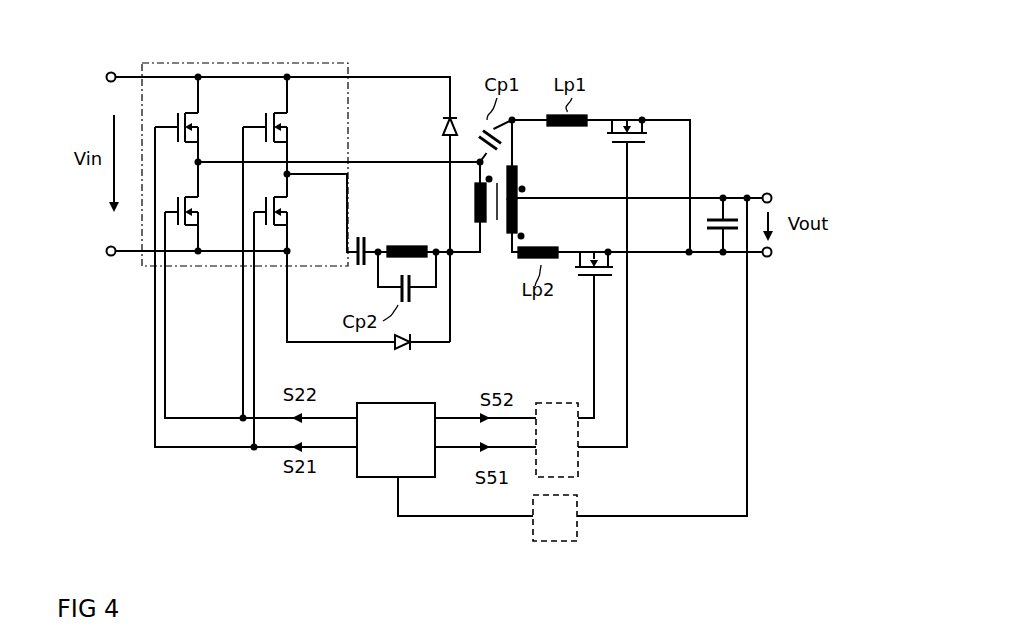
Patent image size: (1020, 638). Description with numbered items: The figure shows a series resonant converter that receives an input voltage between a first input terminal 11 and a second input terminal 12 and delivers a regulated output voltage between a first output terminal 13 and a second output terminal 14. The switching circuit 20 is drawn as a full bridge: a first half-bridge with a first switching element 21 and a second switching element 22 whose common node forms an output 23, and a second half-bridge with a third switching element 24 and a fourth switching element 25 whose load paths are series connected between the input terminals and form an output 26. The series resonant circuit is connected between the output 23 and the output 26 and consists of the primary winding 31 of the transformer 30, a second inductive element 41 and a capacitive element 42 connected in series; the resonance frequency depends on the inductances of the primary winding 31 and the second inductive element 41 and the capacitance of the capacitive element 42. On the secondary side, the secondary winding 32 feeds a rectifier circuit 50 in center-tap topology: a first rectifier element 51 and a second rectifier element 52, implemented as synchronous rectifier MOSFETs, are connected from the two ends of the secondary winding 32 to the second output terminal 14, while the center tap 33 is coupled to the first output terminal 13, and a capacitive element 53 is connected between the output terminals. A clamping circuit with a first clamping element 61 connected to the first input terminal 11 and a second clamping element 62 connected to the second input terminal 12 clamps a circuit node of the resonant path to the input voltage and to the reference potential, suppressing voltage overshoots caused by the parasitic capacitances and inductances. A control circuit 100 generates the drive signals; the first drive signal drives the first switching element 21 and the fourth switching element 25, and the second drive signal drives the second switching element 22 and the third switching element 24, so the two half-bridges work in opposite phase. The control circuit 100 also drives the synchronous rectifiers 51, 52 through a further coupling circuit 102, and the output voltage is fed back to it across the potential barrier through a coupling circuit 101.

The first input terminal 11 is at (112, 66).
The second input terminal 12 is at (113, 260).
The first output terminal 13 is at (771, 191).
The second output terminal 14 is at (769, 260).
The switching circuit 20 is at (247, 65).
The first switching element 21 is at (205, 121).
The second switching element 22 is at (201, 215).
The output of the half-bridge circuit 23 is at (207, 159).
The third switching element 24 is at (293, 134).
The fourth switching element 25 is at (294, 218).
The output of the second half-bridge circuit 26 is at (347, 194).
The transformer 30 is at (509, 224).
The primary winding 31 is at (473, 205).
The secondary winding 32 is at (521, 182).
The center tap 33 is at (524, 240).
The second inductive element 41 is at (408, 243).
The capacitive element 42 is at (357, 271).
The rectifier circuit 50 is at (612, 156).
The first rectifier element 51 is at (626, 113).
The second rectifier element 52 is at (590, 250).
The capacitive element 53 is at (717, 207).
The first clamping element 61 is at (406, 354).
The second clamping element 62 is at (439, 129).
The control circuit 100 is at (372, 485).
The coupling circuit 101 is at (557, 545).
The further coupling circuit 102 is at (553, 401).